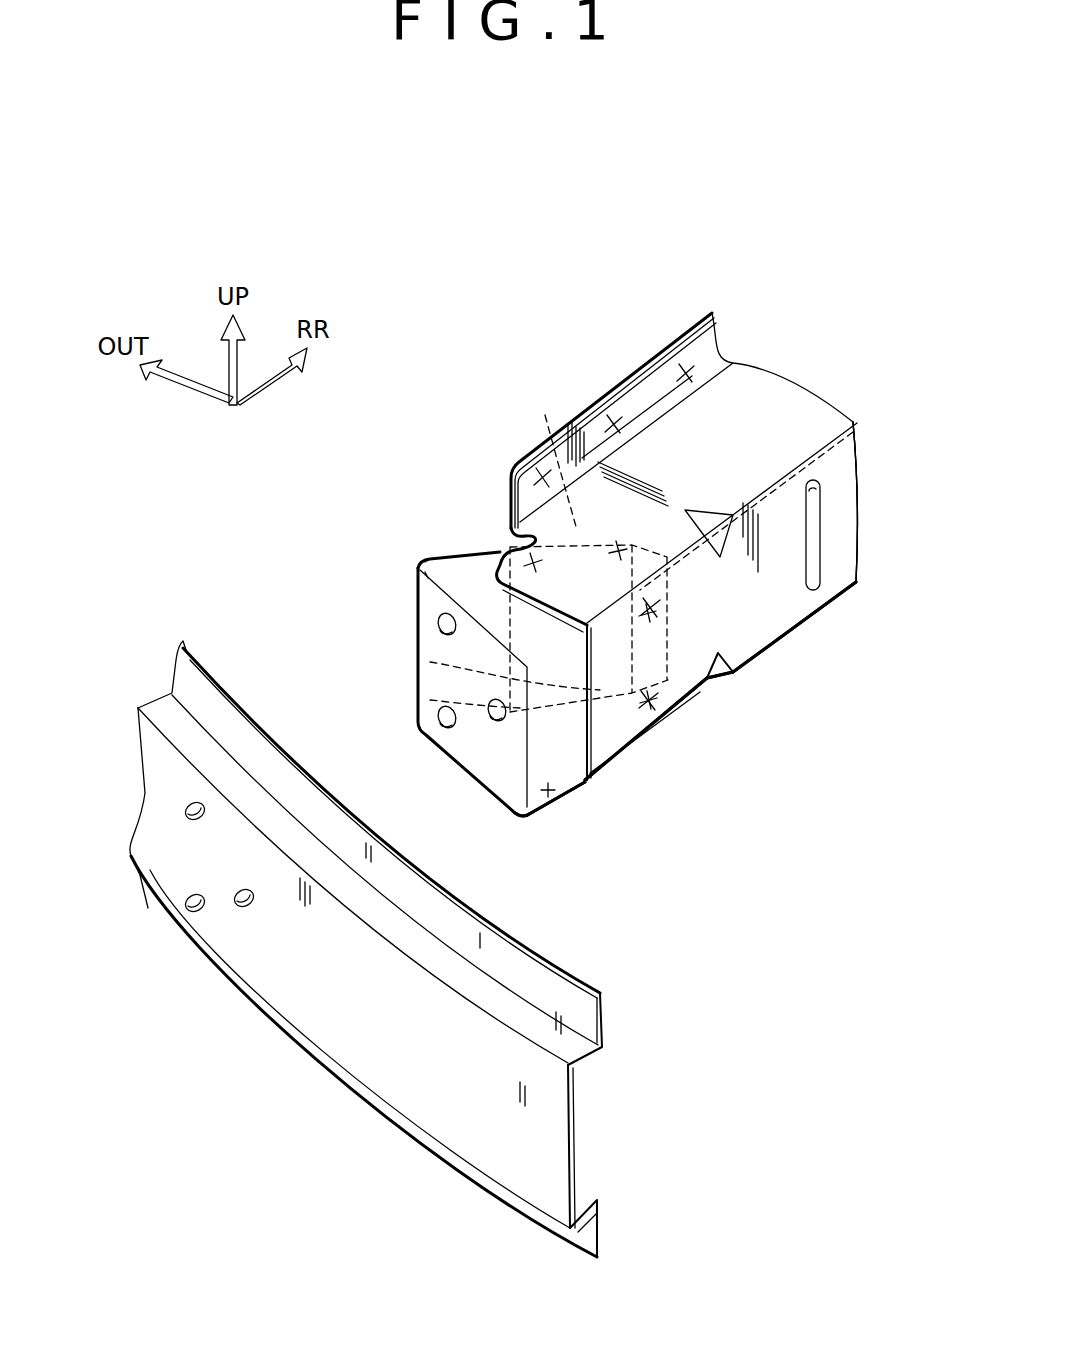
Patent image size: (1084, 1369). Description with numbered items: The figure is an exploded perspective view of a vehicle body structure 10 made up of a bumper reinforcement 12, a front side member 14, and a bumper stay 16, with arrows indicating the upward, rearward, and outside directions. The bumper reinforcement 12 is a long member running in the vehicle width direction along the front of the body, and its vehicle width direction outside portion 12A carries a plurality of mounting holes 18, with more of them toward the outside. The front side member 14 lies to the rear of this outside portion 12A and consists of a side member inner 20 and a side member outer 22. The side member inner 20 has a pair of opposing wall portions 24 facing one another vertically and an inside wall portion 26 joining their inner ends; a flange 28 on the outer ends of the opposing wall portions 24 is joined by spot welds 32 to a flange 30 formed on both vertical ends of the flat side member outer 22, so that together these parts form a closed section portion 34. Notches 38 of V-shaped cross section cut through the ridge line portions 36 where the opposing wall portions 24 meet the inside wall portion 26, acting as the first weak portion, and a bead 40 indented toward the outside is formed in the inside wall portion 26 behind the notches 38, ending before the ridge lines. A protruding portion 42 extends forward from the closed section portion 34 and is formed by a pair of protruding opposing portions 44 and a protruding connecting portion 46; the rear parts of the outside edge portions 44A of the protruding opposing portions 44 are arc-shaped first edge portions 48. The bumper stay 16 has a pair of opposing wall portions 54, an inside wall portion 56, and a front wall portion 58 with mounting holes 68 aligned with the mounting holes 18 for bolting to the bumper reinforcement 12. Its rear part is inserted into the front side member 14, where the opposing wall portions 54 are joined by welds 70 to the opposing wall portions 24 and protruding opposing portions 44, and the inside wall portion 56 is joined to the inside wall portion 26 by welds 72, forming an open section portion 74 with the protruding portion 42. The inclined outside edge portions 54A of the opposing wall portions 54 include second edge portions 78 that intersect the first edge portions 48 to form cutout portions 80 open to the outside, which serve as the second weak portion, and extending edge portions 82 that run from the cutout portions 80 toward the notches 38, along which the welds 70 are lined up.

The vehicle body structure 10 is at (460, 280).
The bumper reinforcement 12 is at (393, 1132).
The vehicle width direction outside portion 12A is at (168, 882).
The front side member 14 is at (772, 230).
The bumper stay 16 is at (543, 812).
The mounting holes 18 is at (190, 808).
The side member inner 20 is at (760, 362).
The side member outer 22 is at (702, 318).
The opposing wall portions 24 is at (713, 478).
The inside wall portion 26 is at (840, 526).
The flange 28 is at (636, 397).
The flange 30 is at (598, 410).
The welds 32 is at (540, 478).
The closed section portion 34 is at (790, 610).
The ridge line portions 36 is at (852, 428).
The notches 38 is at (735, 505).
The bead 40 is at (820, 496).
The protruding portion 42 is at (613, 768).
The protruding opposing portions 44 is at (598, 560).
The edge portions 44A is at (428, 578).
The protruding connecting portion 46 is at (719, 680).
The first edge portions 48 is at (500, 548).
The opposing wall portions 54 is at (425, 562).
The edge portions 54A is at (425, 572).
The inside wall portion 56 is at (553, 748).
The front wall portion 58 is at (438, 626).
The mounting holes 68 is at (432, 652).
The welds 70 is at (538, 558).
The welds 72 is at (668, 602).
The open section portion 74 is at (700, 690).
The second edge portions 78 is at (452, 562).
The cutout portions 80 is at (420, 418).
The extending edge portions 82 is at (752, 830).